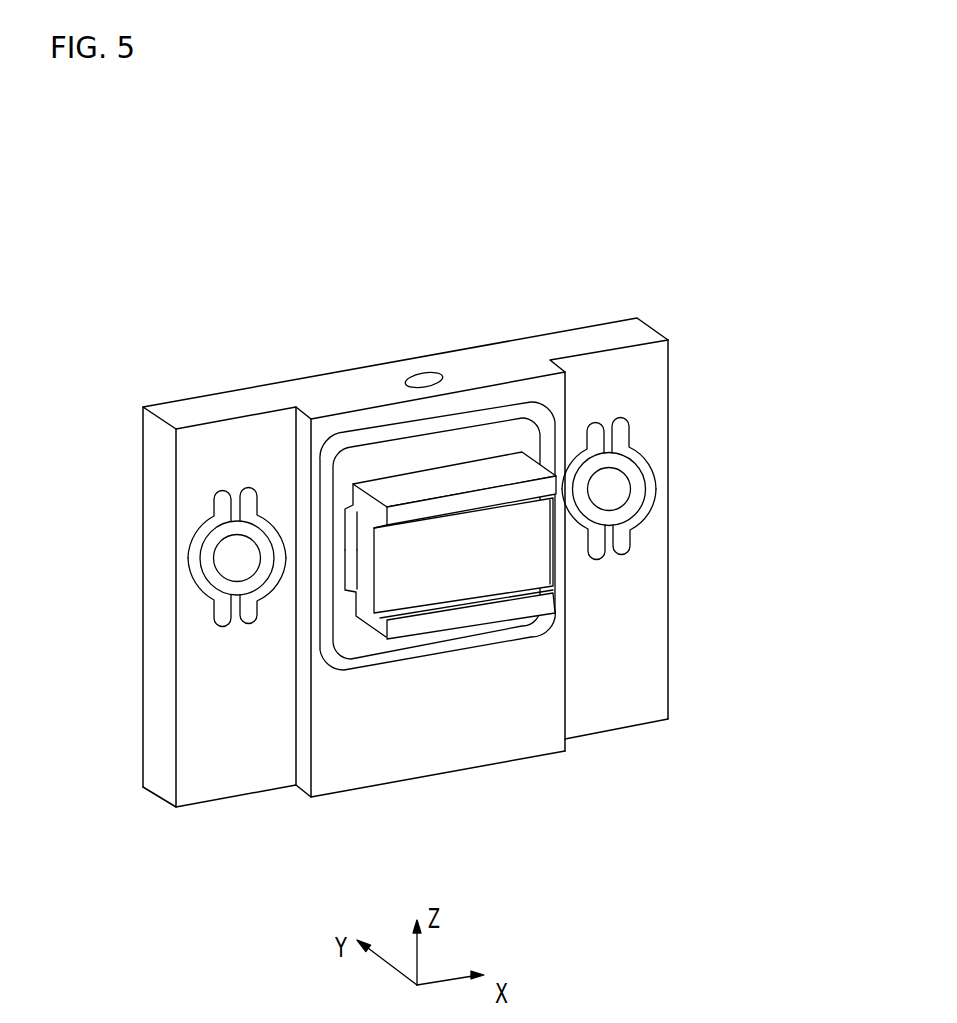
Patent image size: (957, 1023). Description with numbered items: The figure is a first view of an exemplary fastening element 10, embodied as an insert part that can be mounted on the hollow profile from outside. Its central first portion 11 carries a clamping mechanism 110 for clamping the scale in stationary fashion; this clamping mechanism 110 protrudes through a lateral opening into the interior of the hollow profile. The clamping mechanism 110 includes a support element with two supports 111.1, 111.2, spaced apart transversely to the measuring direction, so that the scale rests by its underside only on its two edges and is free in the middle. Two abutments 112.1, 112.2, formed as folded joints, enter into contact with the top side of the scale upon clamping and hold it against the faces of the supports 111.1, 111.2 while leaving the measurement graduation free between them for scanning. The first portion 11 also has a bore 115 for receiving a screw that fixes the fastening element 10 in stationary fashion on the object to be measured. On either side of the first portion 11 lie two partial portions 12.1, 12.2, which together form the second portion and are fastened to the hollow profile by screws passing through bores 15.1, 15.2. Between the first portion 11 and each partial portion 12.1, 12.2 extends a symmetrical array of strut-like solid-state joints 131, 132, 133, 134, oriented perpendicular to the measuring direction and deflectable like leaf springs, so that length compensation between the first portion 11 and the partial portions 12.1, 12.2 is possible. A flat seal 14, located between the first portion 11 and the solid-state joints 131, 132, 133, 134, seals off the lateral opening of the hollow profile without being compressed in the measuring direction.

The fastening element 10 is at (258, 863).
The first portion 11 is at (437, 740).
The clamping mechanism 110 is at (406, 430).
The support 111.1 is at (352, 484).
The support 111.2 is at (380, 625).
The abutment 112.1 is at (478, 503).
The abutment 112.2 is at (480, 613).
The bore 115 is at (420, 373).
The partial portion 12.1 is at (207, 578).
The partial portion 12.2 is at (632, 512).
The seal 14 is at (518, 632).
The bore 15.1 is at (227, 557).
The bore 15.2 is at (613, 488).
The solid-state joint 131 is at (612, 547).
The solid-state joint 132 is at (607, 435).
The solid-state joint 133 is at (232, 611).
The solid-state joint 134 is at (236, 505).